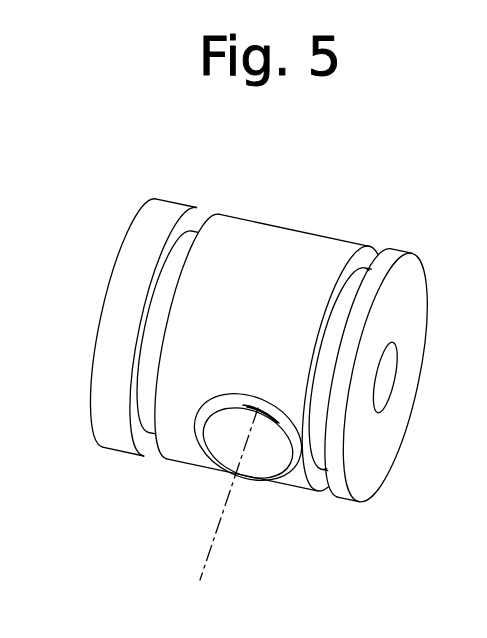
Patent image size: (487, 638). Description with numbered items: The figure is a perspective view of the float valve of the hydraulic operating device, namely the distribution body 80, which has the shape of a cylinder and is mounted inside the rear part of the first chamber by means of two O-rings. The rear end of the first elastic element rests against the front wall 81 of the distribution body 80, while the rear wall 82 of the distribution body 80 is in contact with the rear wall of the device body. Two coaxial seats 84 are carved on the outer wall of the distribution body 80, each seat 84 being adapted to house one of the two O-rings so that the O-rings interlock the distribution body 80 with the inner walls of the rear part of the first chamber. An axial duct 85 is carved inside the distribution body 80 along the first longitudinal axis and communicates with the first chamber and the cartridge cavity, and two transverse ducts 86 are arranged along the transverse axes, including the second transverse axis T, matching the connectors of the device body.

The distribution body 80 is at (278, 238).
The front wall 81 is at (398, 295).
The rear wall 82 is at (113, 267).
The seats 84 is at (197, 232).
The axial duct 85 is at (386, 372).
The transverse ducts 86 is at (270, 456).
The second transverse axis T is at (218, 544).